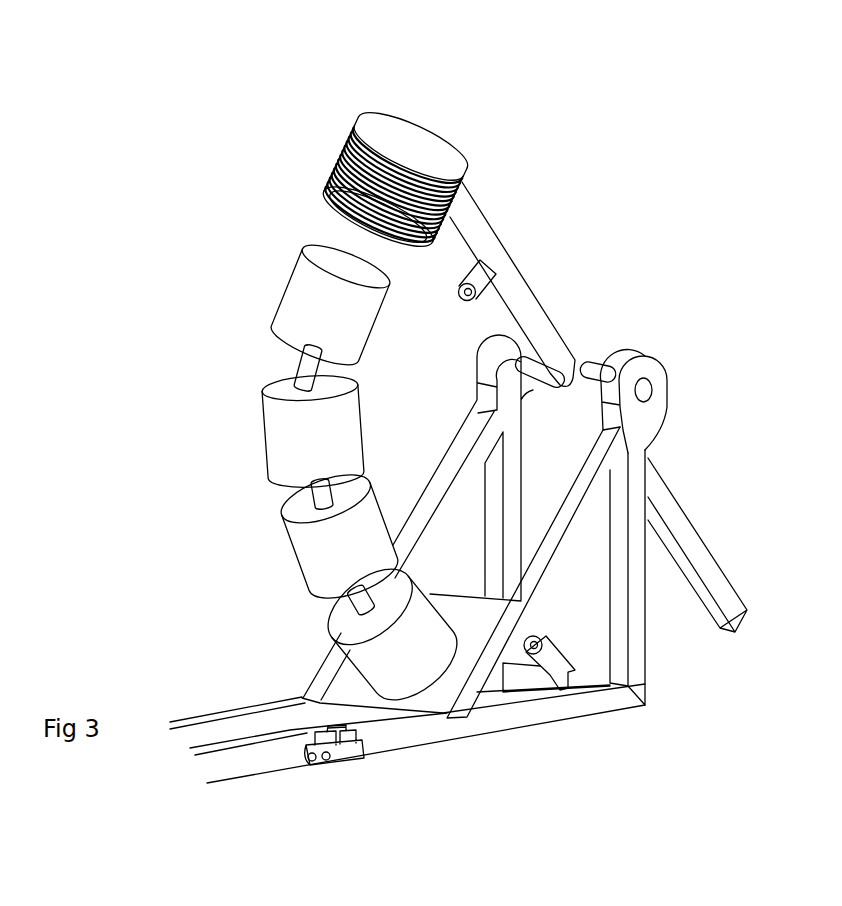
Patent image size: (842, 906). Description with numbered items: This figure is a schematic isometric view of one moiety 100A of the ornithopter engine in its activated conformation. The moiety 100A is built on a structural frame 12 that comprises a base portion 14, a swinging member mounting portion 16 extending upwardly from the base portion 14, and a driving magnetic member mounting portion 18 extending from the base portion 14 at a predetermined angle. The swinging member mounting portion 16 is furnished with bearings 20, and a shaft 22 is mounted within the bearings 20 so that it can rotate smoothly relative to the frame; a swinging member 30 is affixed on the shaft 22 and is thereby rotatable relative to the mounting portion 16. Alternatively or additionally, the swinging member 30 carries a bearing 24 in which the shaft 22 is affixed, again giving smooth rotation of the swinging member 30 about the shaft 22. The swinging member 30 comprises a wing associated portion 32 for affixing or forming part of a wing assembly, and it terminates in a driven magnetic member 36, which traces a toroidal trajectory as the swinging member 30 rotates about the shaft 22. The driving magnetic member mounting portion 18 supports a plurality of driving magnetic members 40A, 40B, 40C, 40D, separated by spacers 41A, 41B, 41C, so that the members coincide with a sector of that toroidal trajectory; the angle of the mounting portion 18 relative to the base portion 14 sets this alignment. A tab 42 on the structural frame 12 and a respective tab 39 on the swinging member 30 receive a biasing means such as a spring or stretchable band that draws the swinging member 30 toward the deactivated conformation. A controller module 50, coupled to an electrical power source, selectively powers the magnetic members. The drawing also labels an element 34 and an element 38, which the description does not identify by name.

The structural frame 12 is at (615, 783).
The base portion 14 is at (413, 733).
The swinging member mounting portion 16 is at (635, 625).
The driving magnetic member mounting portion 18 is at (424, 505).
The bearings 20 is at (655, 390).
The shaft 22 is at (530, 382).
The bearing 24 is at (580, 356).
The swinging member 30 is at (600, 335).
The wing associated portion 32 is at (740, 585).
The arm 34 is at (500, 222).
The driven magnetic member 36 is at (427, 120).
The threaded cylinder 38 is at (331, 157).
The tab 39 is at (461, 306).
The driving magnetic member 40A is at (362, 655).
The driving magnetic member 40B is at (310, 553).
The driving magnetic member 40C is at (280, 436).
The driving magnetic member 40D is at (303, 283).
The spacer 41A is at (355, 598).
The spacer 41B is at (300, 494).
The spacer 41C is at (305, 364).
The tab 42 is at (567, 676).
The controller module 50 is at (356, 762).
The moiety 100A is at (709, 127).